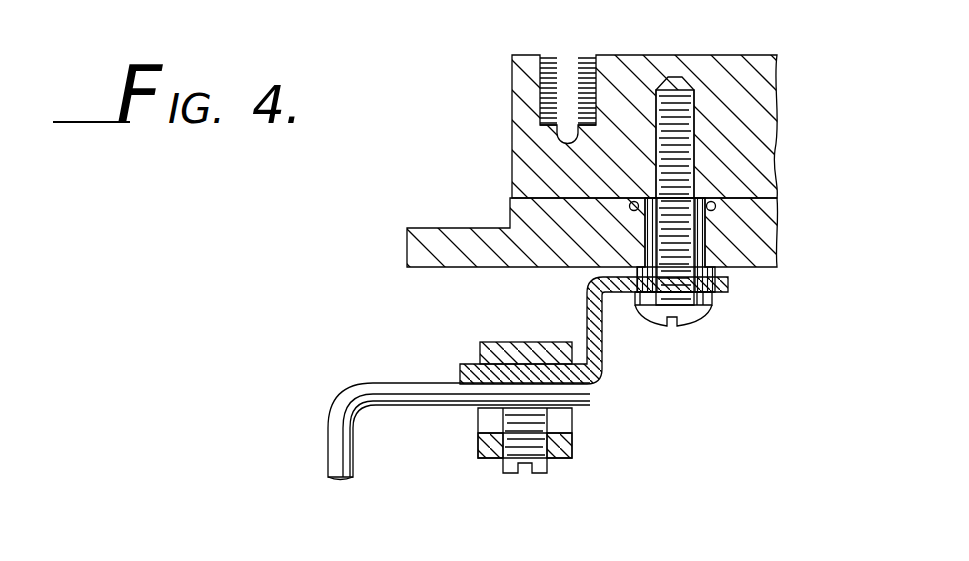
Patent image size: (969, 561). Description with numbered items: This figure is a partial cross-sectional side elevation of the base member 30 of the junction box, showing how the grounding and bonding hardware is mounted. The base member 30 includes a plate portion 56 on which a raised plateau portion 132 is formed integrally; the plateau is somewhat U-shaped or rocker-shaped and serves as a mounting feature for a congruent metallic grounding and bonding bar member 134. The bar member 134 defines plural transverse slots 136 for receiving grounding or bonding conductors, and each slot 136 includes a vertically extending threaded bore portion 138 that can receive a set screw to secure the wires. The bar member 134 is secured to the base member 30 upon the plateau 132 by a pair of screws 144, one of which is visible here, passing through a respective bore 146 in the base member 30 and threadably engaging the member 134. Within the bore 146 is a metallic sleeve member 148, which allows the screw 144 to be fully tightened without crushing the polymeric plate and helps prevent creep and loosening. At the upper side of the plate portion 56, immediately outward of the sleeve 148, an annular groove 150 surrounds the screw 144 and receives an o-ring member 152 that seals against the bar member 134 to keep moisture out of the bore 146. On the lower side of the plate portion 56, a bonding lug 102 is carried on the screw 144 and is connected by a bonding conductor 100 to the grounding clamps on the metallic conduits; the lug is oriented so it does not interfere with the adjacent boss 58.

The base member 30 is at (402, 196).
The plate portion 56 is at (765, 222).
The boss 58 is at (405, 238).
The bonding conductor 100 is at (333, 435).
The bonding lug 102 is at (441, 362).
The raised plateau portion 132 is at (512, 207).
The grounding and bonding bar member 134 is at (652, 57).
The transverse slot 136 is at (567, 52).
The threaded bore portion 138 is at (540, 73).
The screw 144 is at (703, 318).
The bore 146 is at (655, 240).
The metallic sleeve member 148 is at (745, 266).
The annular groove 150 is at (718, 195).
The o-ring member 152 is at (640, 197).